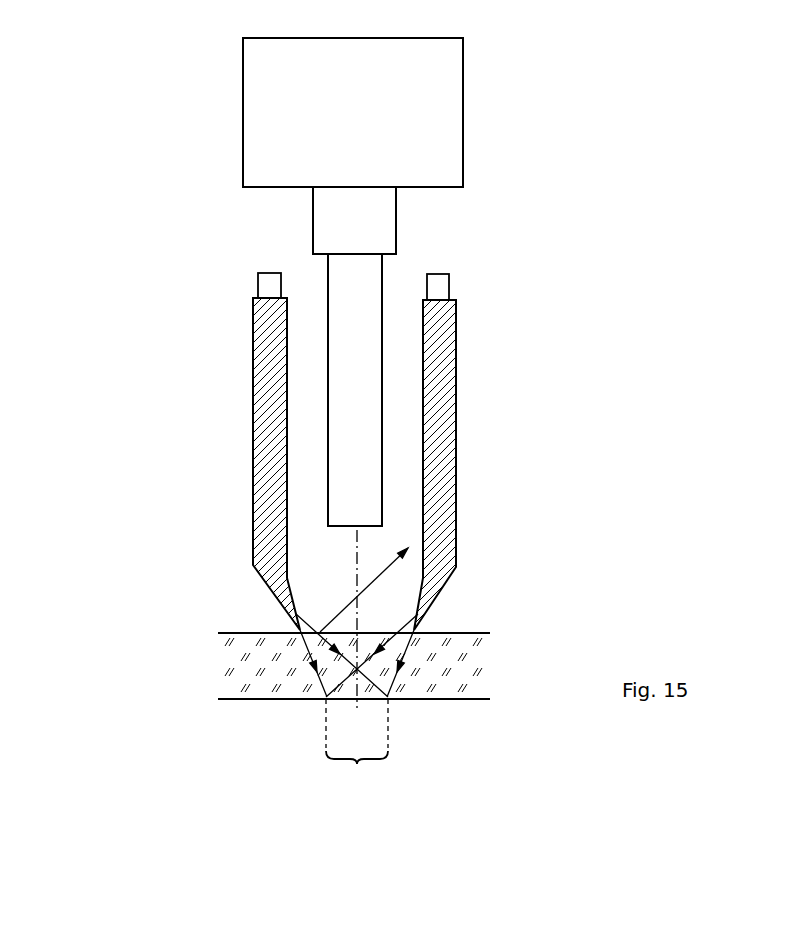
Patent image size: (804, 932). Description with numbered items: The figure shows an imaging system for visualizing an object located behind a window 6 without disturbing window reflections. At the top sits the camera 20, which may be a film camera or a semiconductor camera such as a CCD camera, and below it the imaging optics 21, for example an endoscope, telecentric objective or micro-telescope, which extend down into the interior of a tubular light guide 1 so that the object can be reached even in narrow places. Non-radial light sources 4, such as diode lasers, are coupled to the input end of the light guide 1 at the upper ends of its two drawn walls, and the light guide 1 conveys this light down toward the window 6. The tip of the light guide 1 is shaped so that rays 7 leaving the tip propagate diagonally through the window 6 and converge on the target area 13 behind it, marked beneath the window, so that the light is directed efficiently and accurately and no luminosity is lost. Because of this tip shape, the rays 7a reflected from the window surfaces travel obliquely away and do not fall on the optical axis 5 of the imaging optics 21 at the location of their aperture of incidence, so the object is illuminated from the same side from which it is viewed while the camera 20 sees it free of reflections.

The camera 20 is at (243, 118).
The imaging optics 21 is at (328, 287).
The light sources 4 is at (258, 287).
The tubular light guide 1 is at (253, 408).
The optical axis 5 is at (357, 567).
The rays reflected from the window surfaces 7a is at (343, 609).
The rays of light 7 is at (316, 666).
The window 6 is at (228, 660).
The target area 13 is at (357, 754).